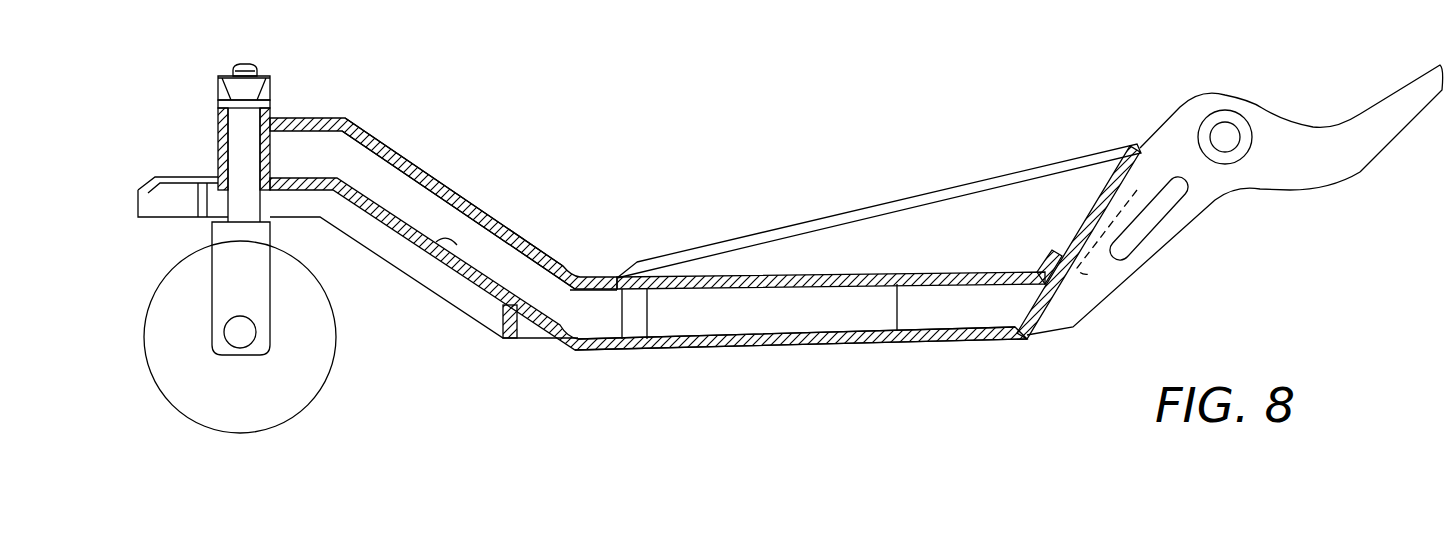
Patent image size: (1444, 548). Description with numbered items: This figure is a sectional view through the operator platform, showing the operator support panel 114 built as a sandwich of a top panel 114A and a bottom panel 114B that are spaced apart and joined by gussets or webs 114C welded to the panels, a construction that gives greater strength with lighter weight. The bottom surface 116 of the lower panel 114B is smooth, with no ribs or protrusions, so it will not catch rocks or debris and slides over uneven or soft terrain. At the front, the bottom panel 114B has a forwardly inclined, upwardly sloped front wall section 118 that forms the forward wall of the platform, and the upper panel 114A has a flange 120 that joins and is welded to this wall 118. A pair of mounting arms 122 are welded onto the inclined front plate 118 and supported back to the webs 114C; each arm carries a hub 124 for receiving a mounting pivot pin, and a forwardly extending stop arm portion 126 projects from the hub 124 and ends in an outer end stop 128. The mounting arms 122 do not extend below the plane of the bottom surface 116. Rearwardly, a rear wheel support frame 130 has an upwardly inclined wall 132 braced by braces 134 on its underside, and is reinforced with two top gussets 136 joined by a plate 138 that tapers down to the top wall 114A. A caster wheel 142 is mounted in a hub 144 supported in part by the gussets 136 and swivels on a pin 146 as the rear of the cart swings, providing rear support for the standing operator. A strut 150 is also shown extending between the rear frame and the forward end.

The operator support panel 114 is at (801, 198).
The top panel 114A is at (787, 283).
The bottom panel 114B is at (622, 347).
The webs 114C is at (718, 313).
The bottom surface 116 is at (833, 343).
The front wall section 118 is at (1093, 217).
The flange 120 is at (1045, 270).
The mounting arms 122 is at (1180, 153).
The hubs 124 is at (1225, 112).
The stop arm portion 126 is at (1285, 147).
The outer end stops 128 is at (1377, 117).
The rear wheel support frame 130 is at (443, 173).
The upwardly inclined wall 132 is at (436, 242).
The braces 134 is at (420, 262).
The top gussets 136 is at (315, 147).
The plate 138 is at (483, 213).
The caster wheel 142 is at (343, 326).
The hub 144 is at (218, 125).
The pin 146 is at (245, 66).
The strut 150 is at (762, 270).